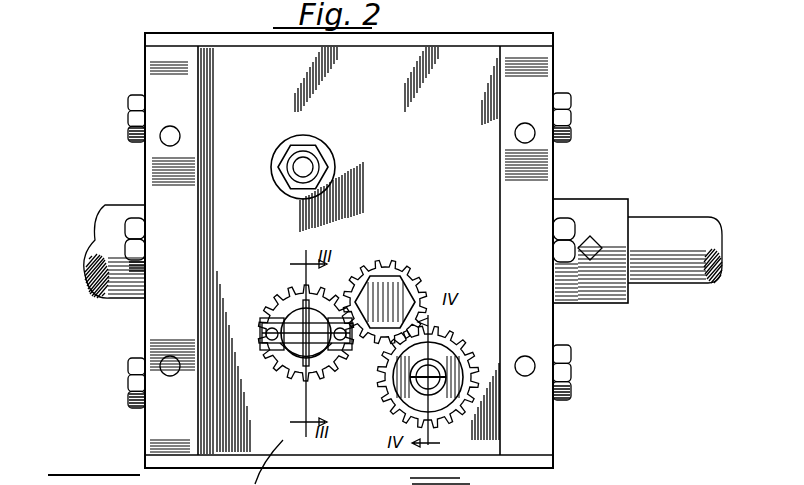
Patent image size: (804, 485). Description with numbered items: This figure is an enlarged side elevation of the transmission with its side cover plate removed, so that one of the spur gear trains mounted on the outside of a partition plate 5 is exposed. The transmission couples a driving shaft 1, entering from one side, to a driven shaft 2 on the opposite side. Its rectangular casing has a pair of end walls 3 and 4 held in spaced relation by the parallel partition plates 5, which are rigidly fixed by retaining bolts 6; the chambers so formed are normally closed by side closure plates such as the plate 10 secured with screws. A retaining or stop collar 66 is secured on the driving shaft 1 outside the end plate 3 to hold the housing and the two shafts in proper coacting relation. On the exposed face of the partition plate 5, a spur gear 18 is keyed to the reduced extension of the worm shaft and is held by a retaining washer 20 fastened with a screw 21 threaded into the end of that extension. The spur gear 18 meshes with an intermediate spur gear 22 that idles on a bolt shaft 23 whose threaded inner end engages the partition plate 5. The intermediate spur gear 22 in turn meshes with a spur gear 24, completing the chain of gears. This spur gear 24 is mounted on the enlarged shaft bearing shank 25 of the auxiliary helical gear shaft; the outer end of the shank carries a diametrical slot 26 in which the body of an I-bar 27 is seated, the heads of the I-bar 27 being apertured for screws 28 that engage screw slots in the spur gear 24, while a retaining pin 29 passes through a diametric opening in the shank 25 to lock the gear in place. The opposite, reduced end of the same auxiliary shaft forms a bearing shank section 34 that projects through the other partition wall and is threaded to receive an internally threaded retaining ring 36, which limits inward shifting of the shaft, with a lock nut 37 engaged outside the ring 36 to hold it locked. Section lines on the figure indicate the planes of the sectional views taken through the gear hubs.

The driving shaft 1 is at (652, 240).
The driven shaft 2 is at (105, 210).
The end wall 3 is at (533, 176).
The end wall 4 is at (148, 160).
The partition plate 5 is at (269, 462).
The retaining bolt 6 is at (138, 298).
The side closure plate 10 is at (212, 38).
The spur gear 18 is at (440, 350).
The retaining washer 20 is at (408, 398).
The screw 21 is at (440, 372).
The intermediate spur gear 22 is at (412, 278).
The bolt shaft 23 is at (380, 292).
The spur gear 24 is at (290, 300).
The shaft bearing shank 25 is at (280, 305).
The diametrical slot 26 is at (326, 370).
The I-bar 27 is at (262, 333).
The screw 28 is at (266, 352).
The retaining pin 29 is at (296, 368).
The shaft bearing shank section 34 is at (306, 166).
The retaining ring 36 is at (299, 140).
The lock nut 37 is at (285, 160).
The stop collar 66 is at (582, 215).